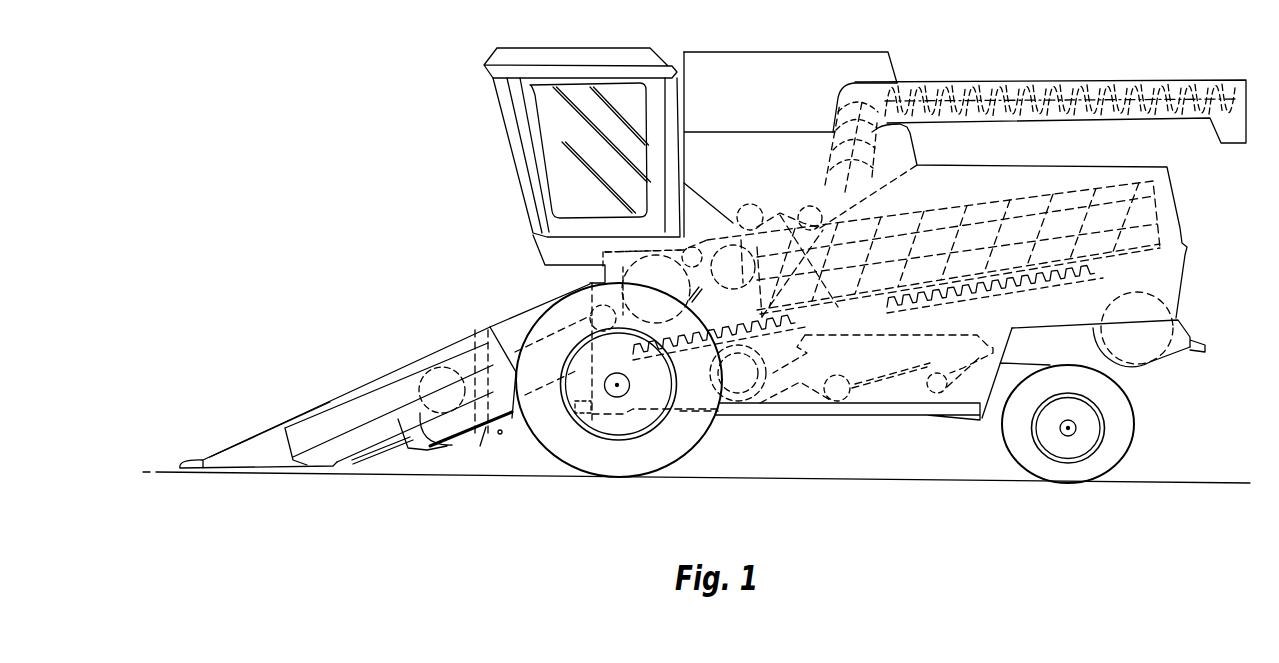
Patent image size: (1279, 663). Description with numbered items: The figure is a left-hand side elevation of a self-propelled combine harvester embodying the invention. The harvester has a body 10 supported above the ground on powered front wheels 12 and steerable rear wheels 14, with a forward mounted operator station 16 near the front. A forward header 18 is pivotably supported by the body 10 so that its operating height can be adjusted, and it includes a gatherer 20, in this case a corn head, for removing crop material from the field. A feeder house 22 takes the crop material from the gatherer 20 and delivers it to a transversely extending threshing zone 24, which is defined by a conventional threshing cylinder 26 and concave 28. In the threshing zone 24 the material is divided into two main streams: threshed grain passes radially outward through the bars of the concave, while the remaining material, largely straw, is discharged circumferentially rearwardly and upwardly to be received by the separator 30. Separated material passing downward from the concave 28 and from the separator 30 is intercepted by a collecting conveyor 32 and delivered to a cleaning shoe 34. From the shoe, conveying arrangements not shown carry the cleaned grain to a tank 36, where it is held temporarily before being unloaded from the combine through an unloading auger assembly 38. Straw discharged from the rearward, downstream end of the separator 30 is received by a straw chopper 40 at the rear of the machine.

The body 10 is at (1178, 188).
The powered front wheels 12 is at (703, 443).
The steerable rear wheels 14 is at (1131, 447).
The operator station 16 is at (514, 181).
The header 18 is at (386, 352).
The gatherer 20 is at (325, 405).
The feeder house 22 is at (513, 325).
The threshing zone 24 is at (712, 263).
The threshing cylinder 26 is at (605, 252).
The concave 28 is at (704, 303).
The separator 30 is at (995, 190).
The collecting conveyor 32 is at (1041, 299).
The cleaning shoe 34 is at (877, 383).
The tank 36 is at (819, 52).
The unloading auger assembly 38 is at (994, 80).
The straw chopper 40 is at (1153, 366).